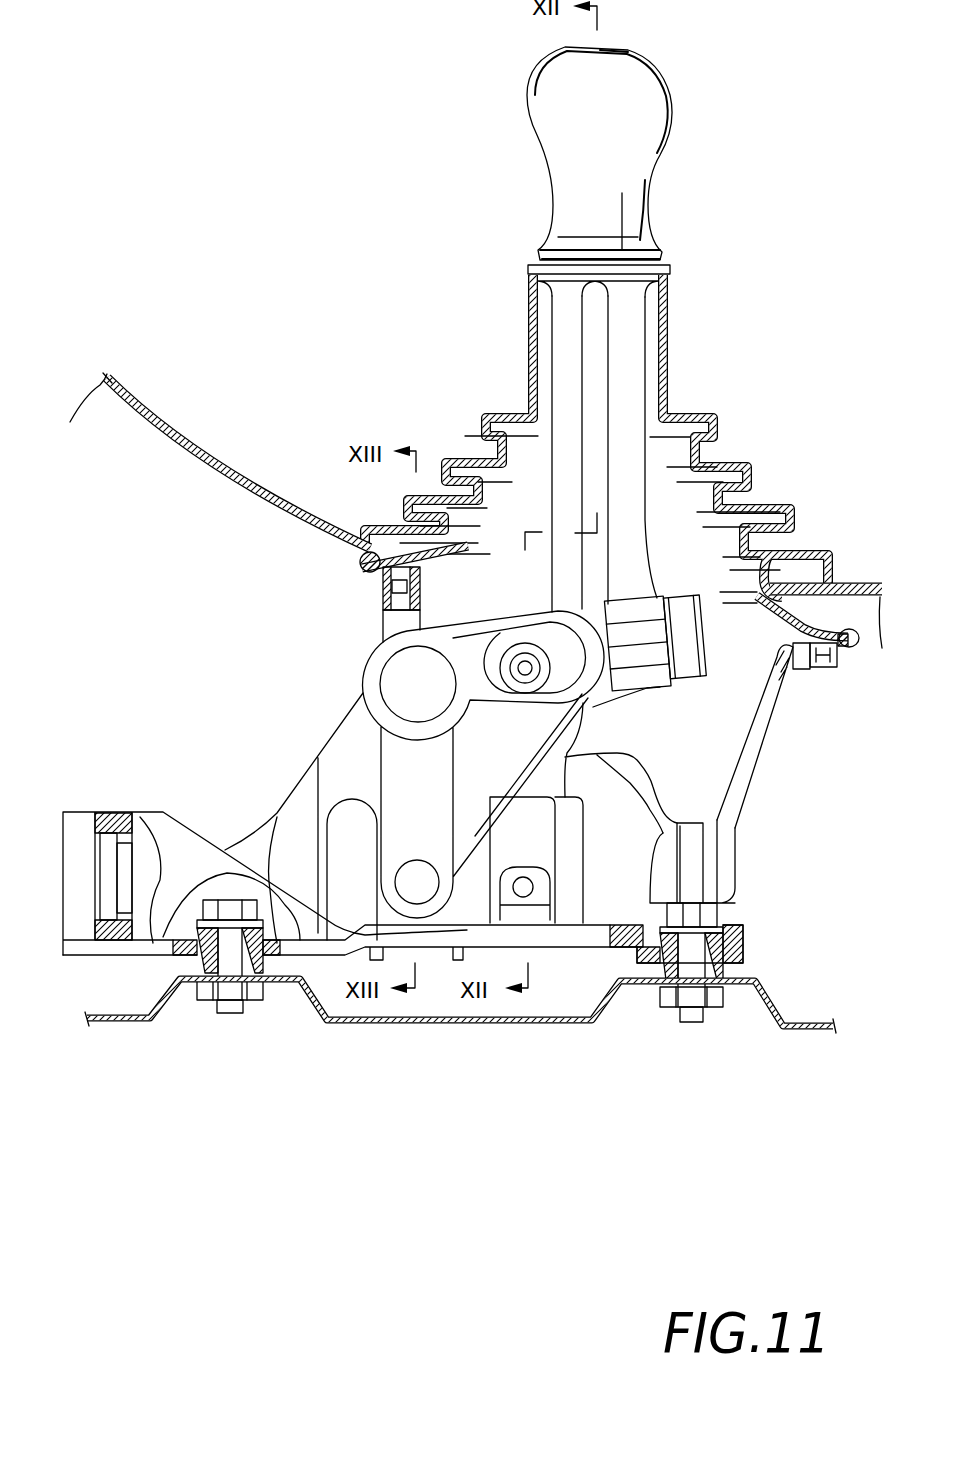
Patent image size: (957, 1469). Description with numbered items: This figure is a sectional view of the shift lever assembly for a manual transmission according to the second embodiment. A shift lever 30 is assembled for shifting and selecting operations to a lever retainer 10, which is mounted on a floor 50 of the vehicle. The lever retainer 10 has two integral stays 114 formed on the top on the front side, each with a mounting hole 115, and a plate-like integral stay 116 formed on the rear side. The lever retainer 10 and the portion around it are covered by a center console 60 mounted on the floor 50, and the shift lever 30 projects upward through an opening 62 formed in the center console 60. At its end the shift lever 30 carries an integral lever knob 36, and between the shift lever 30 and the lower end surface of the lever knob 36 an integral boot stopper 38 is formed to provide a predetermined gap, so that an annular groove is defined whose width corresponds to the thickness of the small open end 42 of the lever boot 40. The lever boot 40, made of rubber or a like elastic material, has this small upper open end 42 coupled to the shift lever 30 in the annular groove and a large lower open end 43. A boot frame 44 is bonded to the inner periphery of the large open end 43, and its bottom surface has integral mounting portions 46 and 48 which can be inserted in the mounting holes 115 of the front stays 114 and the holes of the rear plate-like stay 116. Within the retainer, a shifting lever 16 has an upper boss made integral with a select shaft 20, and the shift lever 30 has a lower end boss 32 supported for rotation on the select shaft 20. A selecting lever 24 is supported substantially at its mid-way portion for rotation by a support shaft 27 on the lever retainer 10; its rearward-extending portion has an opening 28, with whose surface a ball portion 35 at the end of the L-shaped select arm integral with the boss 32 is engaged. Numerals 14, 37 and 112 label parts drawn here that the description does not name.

The lever retainer 10 is at (343, 765).
The mounting bolt 14 is at (197, 960).
The shifting lever 16 is at (540, 824).
The select shaft 20 is at (687, 643).
The selecting lever 24 is at (393, 730).
The support shaft 27 is at (403, 690).
The opening 28 is at (567, 673).
The shift lever 30 is at (627, 342).
The lower end boss 32 is at (657, 693).
The ball portion 35 is at (525, 673).
The lever knob 36 is at (627, 117).
The knob top 37 is at (605, 48).
The boot stopper 38 is at (647, 283).
The lever boot 40 is at (720, 427).
The small open end 42 is at (557, 262).
The large open end 43 is at (845, 652).
The boot frame 44 is at (410, 510).
The mounting portion 46 is at (377, 580).
The mounting portion 48 is at (835, 665).
The floor 50 is at (770, 1000).
The center console 60 is at (220, 477).
The opening 62 is at (783, 582).
The stud 112 is at (227, 1013).
The stays 114 is at (390, 627).
The mounting holes 115 is at (390, 597).
The plate-like stay 116 is at (800, 669).